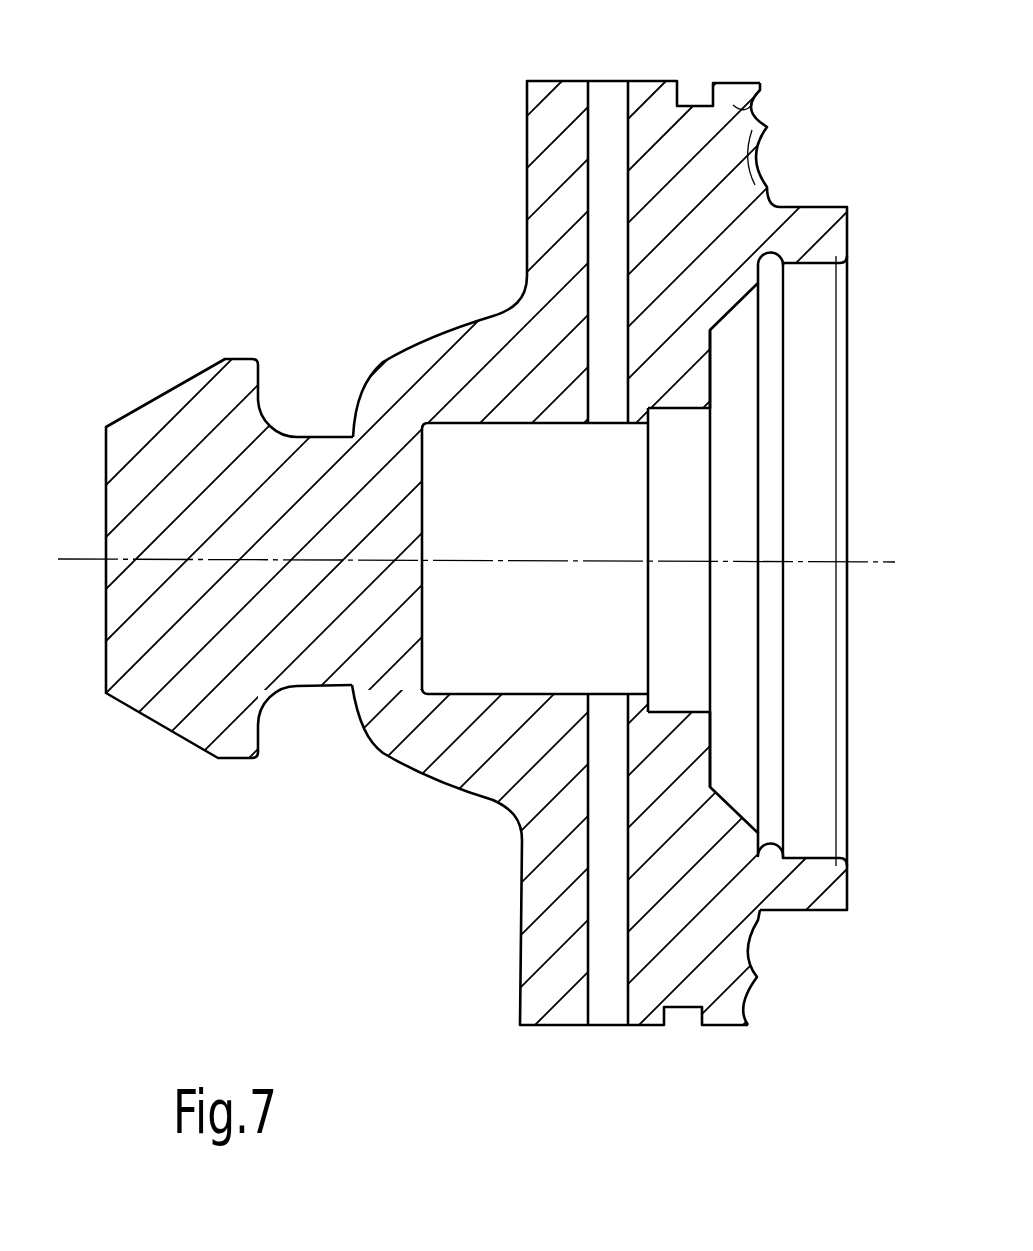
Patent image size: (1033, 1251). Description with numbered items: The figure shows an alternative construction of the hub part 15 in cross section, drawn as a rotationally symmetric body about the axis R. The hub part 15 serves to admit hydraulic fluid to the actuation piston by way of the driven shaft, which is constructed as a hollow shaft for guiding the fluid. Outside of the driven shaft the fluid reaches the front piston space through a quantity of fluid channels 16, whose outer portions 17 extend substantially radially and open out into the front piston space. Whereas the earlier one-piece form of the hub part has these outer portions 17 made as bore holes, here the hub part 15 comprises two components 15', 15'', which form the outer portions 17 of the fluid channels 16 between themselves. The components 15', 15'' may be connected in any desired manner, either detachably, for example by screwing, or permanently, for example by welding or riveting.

The hub part 15 is at (476, 527).
The component 15' is at (229, 499).
The component 15'' is at (796, 519).
The fluid channels 16 is at (607, 115).
The outer portions 17 is at (603, 878).
The axis of rotation R is at (100, 560).